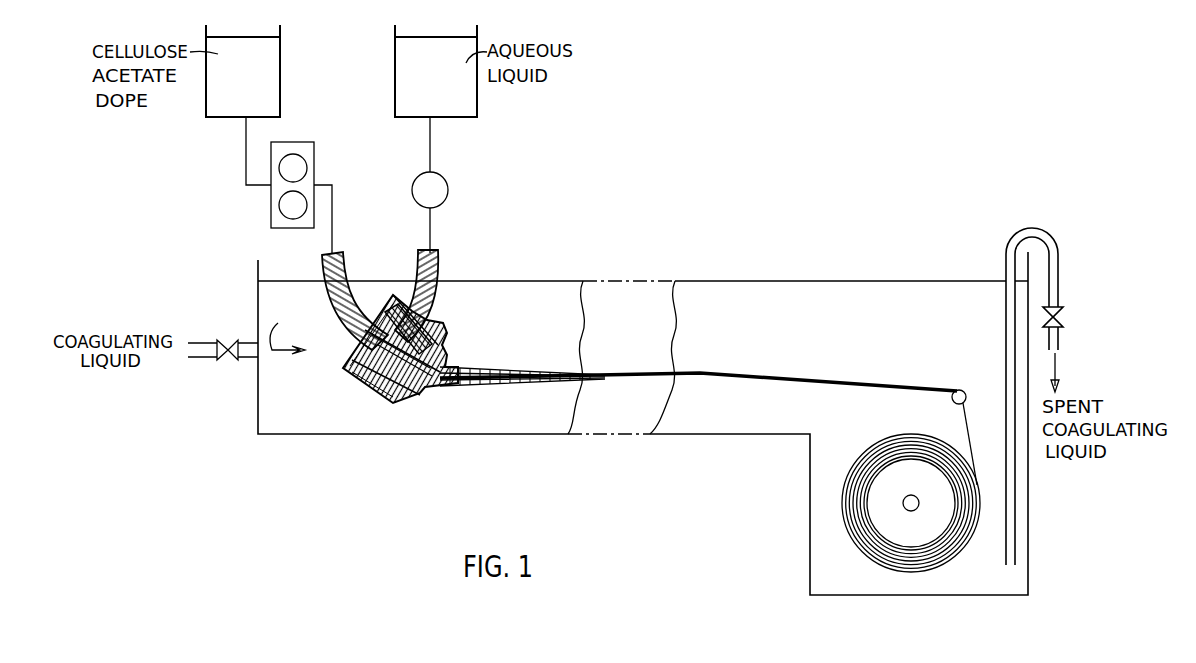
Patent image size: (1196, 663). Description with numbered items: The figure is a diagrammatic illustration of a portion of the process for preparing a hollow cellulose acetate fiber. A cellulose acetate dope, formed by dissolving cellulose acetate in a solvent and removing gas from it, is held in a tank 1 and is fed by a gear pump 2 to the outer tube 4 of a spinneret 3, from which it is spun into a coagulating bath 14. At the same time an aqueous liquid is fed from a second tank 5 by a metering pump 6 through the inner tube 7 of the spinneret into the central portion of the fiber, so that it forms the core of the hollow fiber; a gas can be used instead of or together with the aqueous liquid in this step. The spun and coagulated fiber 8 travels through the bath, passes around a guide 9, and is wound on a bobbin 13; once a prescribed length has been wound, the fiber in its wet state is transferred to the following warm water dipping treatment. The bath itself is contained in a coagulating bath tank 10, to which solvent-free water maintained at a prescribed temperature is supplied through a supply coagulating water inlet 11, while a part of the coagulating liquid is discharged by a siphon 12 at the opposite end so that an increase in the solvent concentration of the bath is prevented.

The tank 1 is at (243, 71).
The gear pump 2 is at (271, 216).
The spinneret 3 is at (372, 385).
The outer tube 4 is at (430, 326).
The tank 5 is at (436, 71).
The metering pump 6 is at (436, 186).
The inner tube 7 is at (420, 362).
The fiber 8 is at (704, 372).
The guide 9 is at (961, 390).
The coagulating bath tank 10 is at (322, 434).
The supply coagulating water inlet 11 is at (290, 332).
The siphon 12 is at (1057, 358).
The bobbin 13 is at (911, 511).
The coagulating bath 14 is at (490, 293).